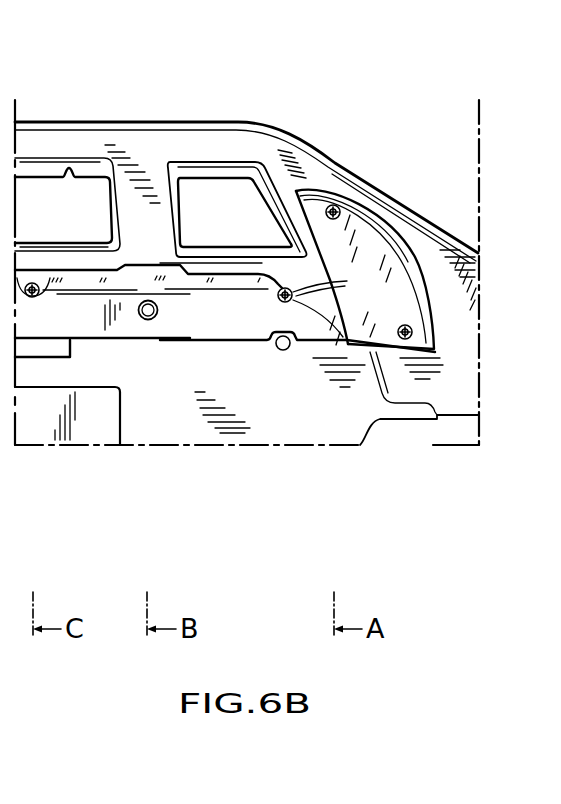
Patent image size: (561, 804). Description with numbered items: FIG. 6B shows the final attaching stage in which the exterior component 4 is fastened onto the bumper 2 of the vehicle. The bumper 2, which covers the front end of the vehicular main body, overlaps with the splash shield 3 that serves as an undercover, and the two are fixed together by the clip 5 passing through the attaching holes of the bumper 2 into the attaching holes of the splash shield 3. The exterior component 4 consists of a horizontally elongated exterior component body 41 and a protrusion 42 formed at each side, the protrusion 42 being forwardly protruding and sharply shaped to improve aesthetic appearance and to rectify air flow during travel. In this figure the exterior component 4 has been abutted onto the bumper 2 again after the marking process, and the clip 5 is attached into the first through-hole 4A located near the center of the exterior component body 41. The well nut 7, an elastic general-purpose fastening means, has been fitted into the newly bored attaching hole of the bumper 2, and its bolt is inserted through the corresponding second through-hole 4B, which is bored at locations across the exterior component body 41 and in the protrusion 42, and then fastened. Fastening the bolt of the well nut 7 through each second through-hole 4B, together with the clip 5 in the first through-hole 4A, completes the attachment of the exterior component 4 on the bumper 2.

The bumper 2 is at (131, 154).
The splash shield 3 is at (83, 373).
The exterior component 4 is at (245, 316).
The first through-hole 4A is at (142, 322).
The second through-hole 4B is at (328, 204).
The clip 5 is at (151, 322).
The well nut 7 is at (28, 283).
The exterior component body 41 is at (213, 328).
The protrusion 42 is at (412, 277).